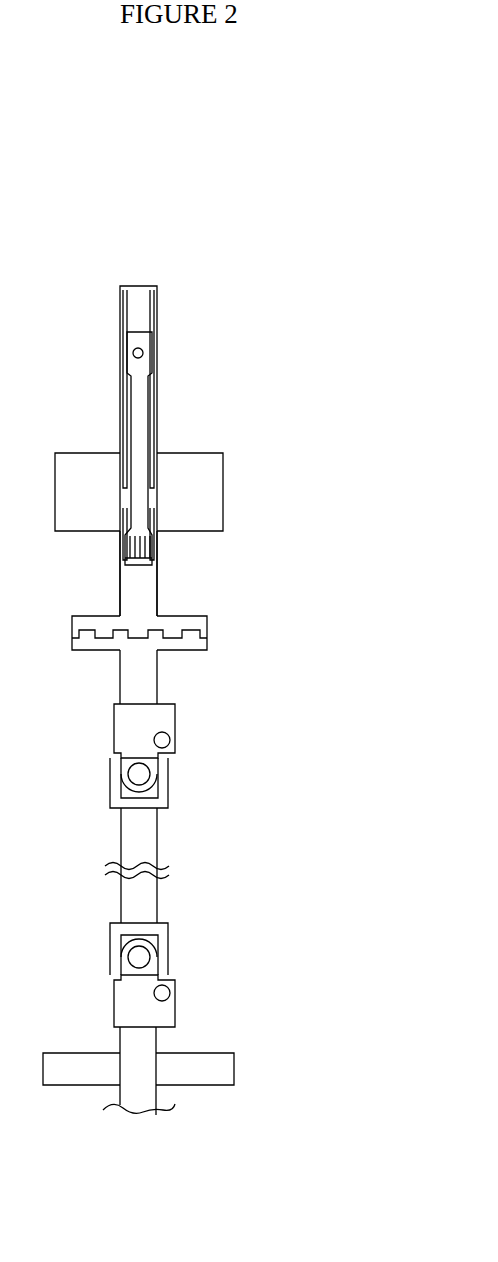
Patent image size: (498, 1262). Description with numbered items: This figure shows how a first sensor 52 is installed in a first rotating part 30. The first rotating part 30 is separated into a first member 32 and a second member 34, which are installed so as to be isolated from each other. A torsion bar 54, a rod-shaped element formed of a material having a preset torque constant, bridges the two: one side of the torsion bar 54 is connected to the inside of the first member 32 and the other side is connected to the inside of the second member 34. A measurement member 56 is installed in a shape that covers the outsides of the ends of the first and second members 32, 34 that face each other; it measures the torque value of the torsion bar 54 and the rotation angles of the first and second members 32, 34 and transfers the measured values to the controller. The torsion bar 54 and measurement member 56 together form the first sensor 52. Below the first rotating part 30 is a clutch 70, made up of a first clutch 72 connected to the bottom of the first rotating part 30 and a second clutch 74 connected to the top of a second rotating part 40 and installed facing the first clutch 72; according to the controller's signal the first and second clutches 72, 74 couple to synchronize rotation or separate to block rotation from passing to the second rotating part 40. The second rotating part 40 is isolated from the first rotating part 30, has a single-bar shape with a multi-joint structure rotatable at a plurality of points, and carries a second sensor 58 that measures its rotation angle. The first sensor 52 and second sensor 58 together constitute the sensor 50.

The first rotating part 30 is at (180, 441).
The first member 32 is at (142, 306).
The second member 34 is at (142, 588).
The second rotating part 40 is at (221, 796).
The sensor 50 is at (214, 483).
The first sensor 52 is at (243, 505).
The torsion bar 54 is at (137, 410).
The measurement member 56 is at (207, 484).
The second sensor 58 is at (269, 1036).
The clutch 70 is at (196, 629).
The first clutch 72 is at (205, 620).
The second clutch 74 is at (205, 643).